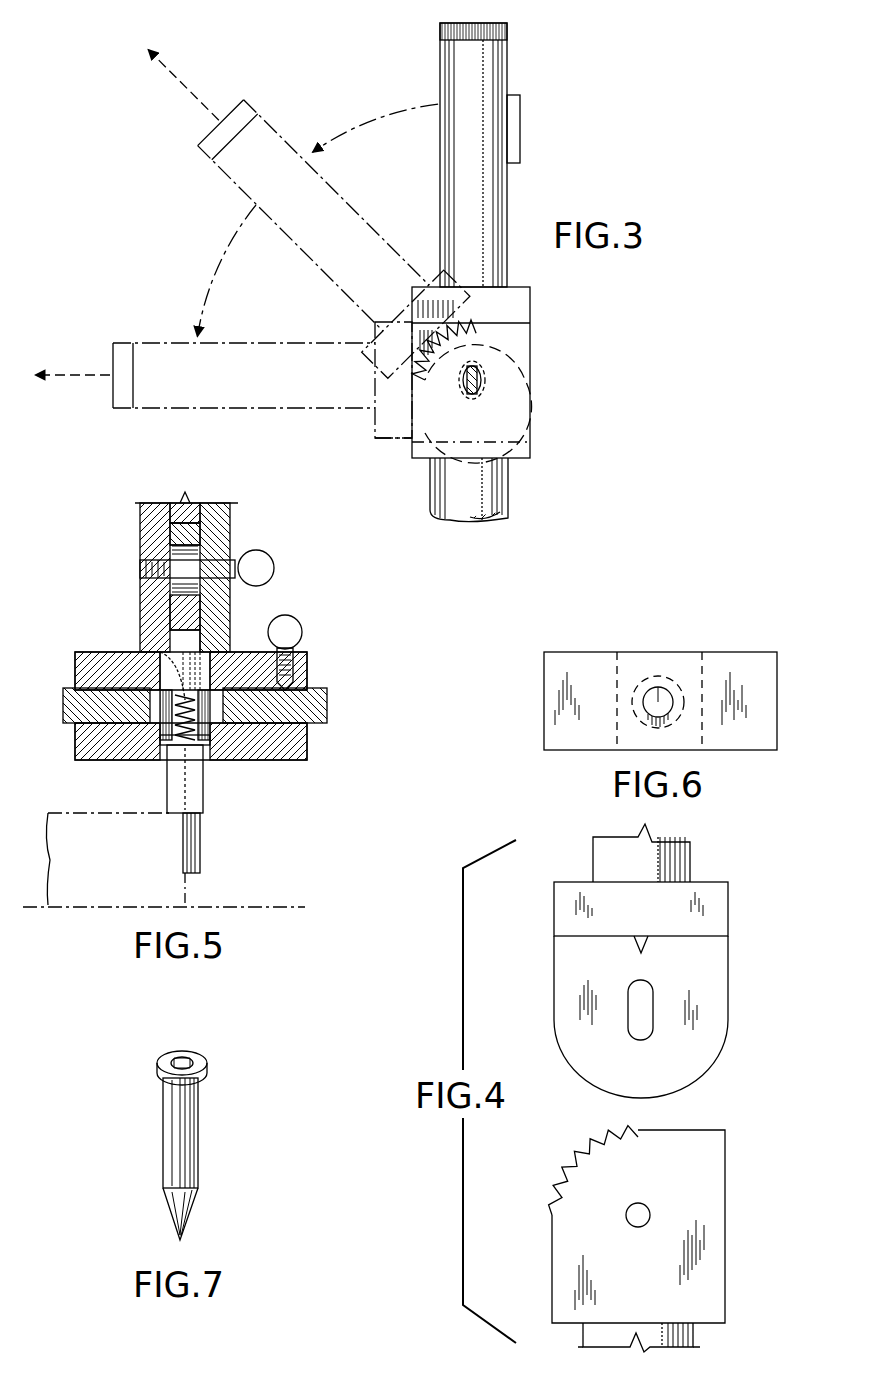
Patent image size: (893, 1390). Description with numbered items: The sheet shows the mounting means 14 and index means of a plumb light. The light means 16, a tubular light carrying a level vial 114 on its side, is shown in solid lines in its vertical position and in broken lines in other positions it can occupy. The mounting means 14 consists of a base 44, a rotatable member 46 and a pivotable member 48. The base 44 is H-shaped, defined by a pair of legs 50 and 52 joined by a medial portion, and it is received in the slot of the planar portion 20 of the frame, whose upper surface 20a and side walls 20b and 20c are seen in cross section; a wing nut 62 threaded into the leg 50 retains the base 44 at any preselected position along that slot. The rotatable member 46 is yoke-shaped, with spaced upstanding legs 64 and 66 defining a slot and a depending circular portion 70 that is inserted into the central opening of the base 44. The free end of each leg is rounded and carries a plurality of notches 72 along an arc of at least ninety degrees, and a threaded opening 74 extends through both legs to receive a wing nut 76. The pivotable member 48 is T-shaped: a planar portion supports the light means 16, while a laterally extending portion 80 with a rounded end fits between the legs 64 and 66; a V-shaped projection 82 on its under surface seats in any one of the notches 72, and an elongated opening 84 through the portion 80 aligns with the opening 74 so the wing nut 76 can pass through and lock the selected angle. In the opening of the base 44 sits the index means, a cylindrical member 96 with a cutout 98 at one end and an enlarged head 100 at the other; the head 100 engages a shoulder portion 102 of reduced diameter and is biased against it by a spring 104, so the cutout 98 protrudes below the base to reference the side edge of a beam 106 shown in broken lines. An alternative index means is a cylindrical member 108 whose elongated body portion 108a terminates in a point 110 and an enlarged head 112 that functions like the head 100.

In FIG. 3, the mounting means 14 is at (535, 358).
In FIG. 3, the light means 16 is at (510, 60).
In FIG. 5, the planar portion 20 is at (210, 700).
In FIG. 5, the upper surface 20a is at (320, 690).
In FIG. 5, the side wall 20b is at (327, 708).
In FIG. 5, the side wall 20c is at (63, 695).
In FIG. 6, the base 44 is at (782, 684).
In FIG. 4, the rotatable member 46 is at (730, 1163).
In FIG. 3, the pivotable member 48 is at (535, 299).
In FIG. 4, the pivotable member 48 is at (735, 902).
In FIG. 5, the leg 50 is at (307, 665).
In FIG. 5, the leg 52 is at (307, 745).
In FIG. 5, the wing nut 62 is at (300, 625).
In FIG. 3, the leg 64 is at (471, 391).
In FIG. 5, the leg 64 is at (230, 604).
In FIG. 4, the leg 64 is at (663, 1183).
In FIG. 5, the leg 66 is at (140, 600).
In FIG. 3, the circular portion 70 is at (500, 490).
In FIG. 4, the circular portion 70 is at (695, 1336).
In FIG. 4, the notches 72 is at (560, 1192).
In FIG. 4, the threaded opening 74 is at (632, 1222).
In FIG. 3, the wing nut 76 is at (480, 380).
In FIG. 5, the wing nut 76 is at (264, 565).
In FIG. 5, the laterally extending portion 80 is at (168, 615).
In FIG. 4, the laterally extending portion 80 is at (715, 992).
In FIG. 5, the V-shaped projection 82 is at (140, 533).
In FIG. 4, the V-shaped projection 82 is at (645, 948).
In FIG. 4, the elongated opening 84 is at (648, 1035).
In FIG. 5, the cylindrical member 96 is at (205, 815).
In FIG. 6, the cylindrical member 96 is at (668, 690).
In FIG. 5, the cutout 98 is at (183, 842).
In FIG. 6, the cutout 98 is at (650, 698).
In FIG. 5, the enlarged head 100 is at (210, 738).
In FIG. 5, the shoulder portion 102 is at (210, 748).
In FIG. 5, the spring 104 is at (160, 660).
In FIG. 5, the beam 106 is at (80, 812).
In FIG. 7, the cylindrical member 108 is at (205, 1135).
In FIG. 7, the body portion 108a is at (192, 1110).
In FIG. 7, the point 110 is at (185, 1232).
In FIG. 7, the enlarged head 112 is at (205, 1075).
In FIG. 3, the level vial 114 is at (520, 128).